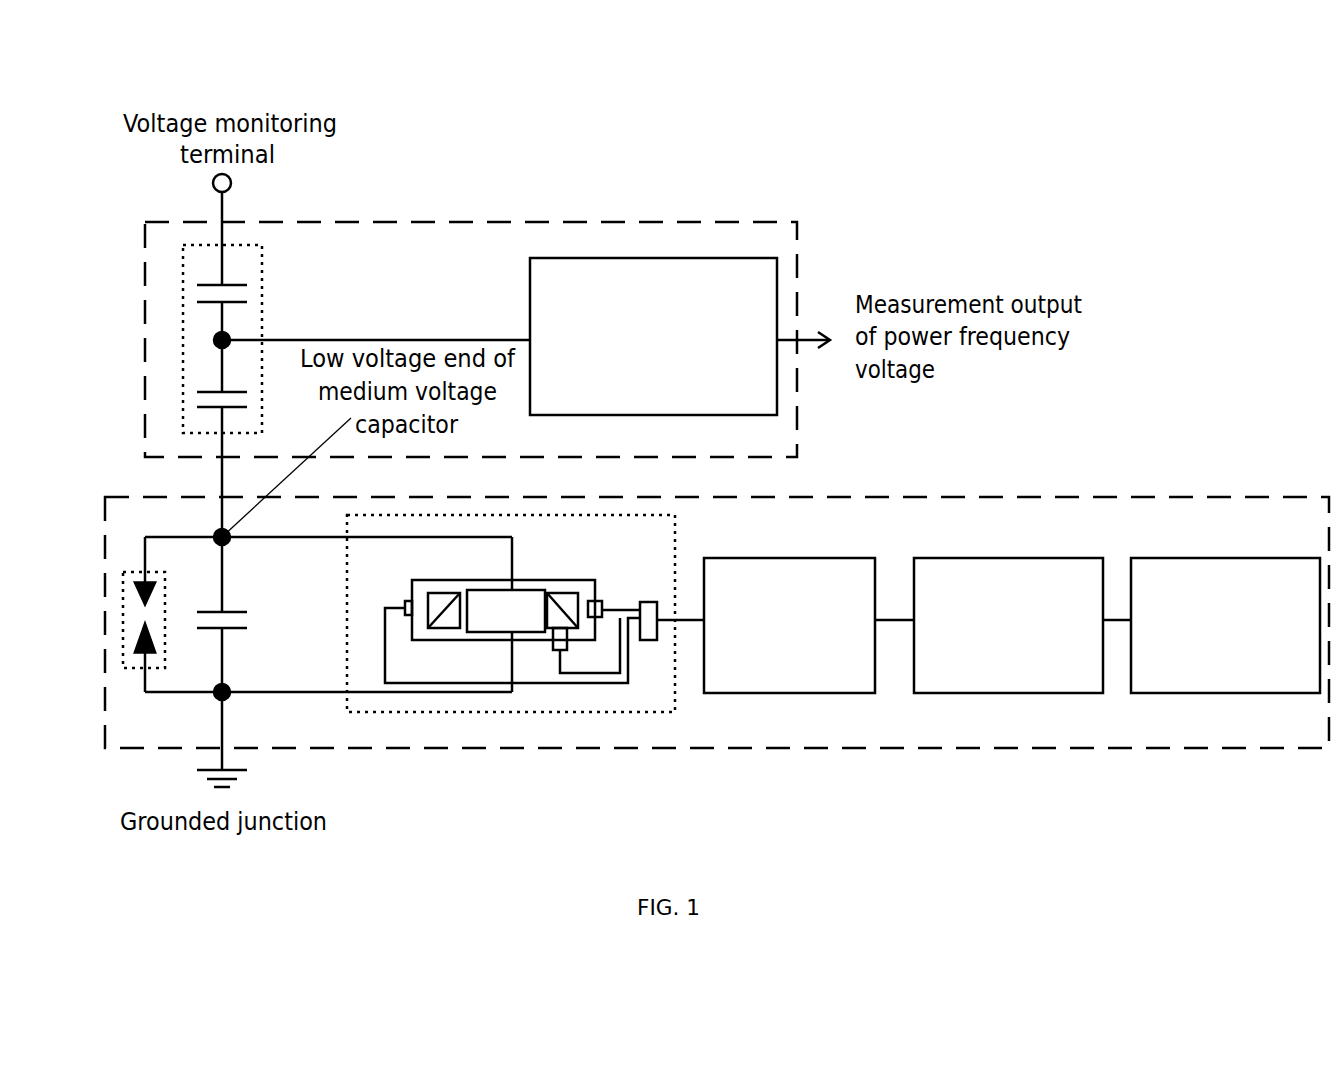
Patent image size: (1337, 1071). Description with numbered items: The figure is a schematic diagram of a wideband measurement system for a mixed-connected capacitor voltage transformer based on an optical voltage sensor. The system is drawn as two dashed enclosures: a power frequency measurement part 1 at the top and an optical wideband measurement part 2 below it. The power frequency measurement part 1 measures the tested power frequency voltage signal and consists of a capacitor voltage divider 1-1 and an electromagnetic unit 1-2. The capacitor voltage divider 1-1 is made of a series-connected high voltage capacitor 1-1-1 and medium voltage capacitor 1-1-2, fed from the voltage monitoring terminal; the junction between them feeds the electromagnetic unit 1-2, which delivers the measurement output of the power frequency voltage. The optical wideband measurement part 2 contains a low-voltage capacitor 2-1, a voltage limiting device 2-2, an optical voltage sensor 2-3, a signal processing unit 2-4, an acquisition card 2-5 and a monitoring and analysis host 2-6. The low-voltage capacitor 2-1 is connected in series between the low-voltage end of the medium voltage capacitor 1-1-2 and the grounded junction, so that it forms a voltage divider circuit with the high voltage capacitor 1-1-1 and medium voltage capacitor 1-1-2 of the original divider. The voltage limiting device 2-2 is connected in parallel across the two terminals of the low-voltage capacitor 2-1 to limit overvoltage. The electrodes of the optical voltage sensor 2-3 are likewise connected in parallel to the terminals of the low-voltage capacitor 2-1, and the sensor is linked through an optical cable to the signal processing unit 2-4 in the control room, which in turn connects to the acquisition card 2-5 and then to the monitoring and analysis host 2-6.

The power frequency measurement part 1 is at (725, 222).
The capacitor voltage divider 1-1 is at (262, 247).
The high voltage capacitor 1-1-1 is at (220, 282).
The medium voltage capacitor 1-1-2 is at (218, 388).
The electromagnetic unit 1-2 is at (555, 262).
The optical wideband measurement part 2 is at (985, 497).
The low-voltage capacitor 2-1 is at (198, 612).
The voltage limiting device 2-2 is at (123, 632).
The optical voltage sensor 2-3 is at (505, 712).
The signal processing unit 2-4 is at (760, 695).
The acquisition card 2-5 is at (990, 695).
The monitoring and analysis host 2-6 is at (1215, 695).